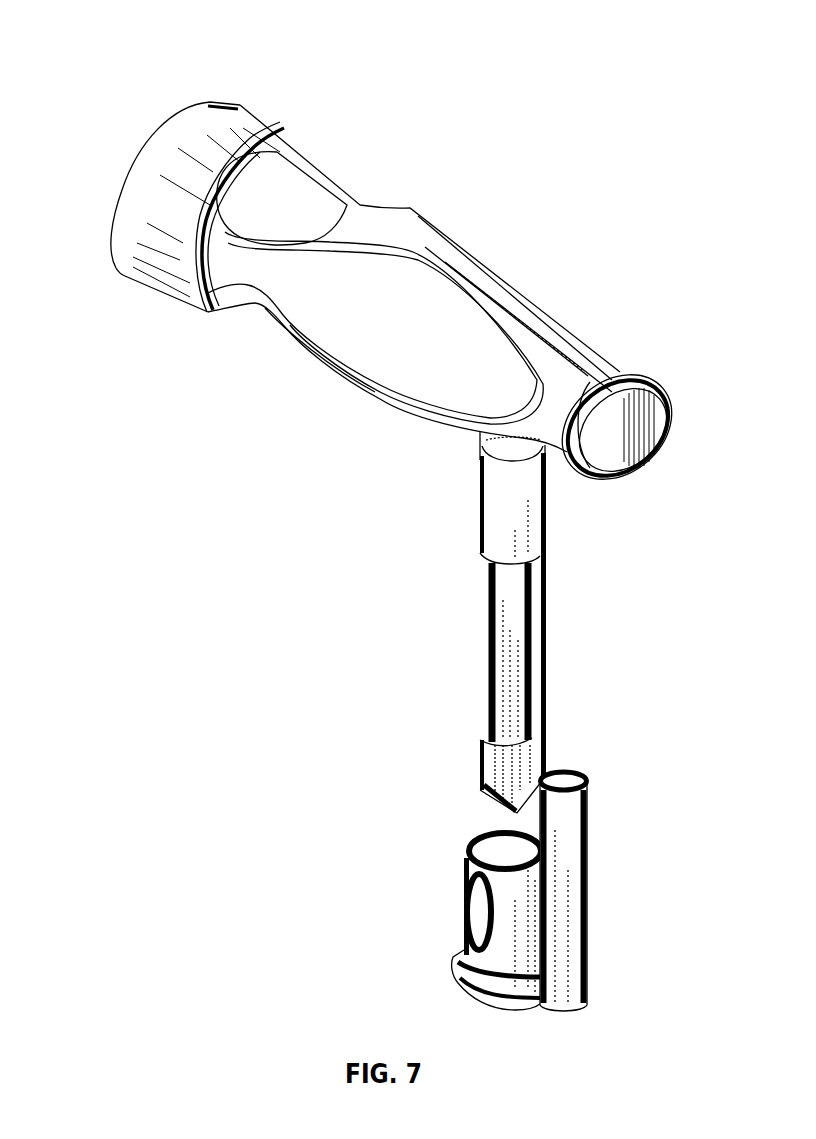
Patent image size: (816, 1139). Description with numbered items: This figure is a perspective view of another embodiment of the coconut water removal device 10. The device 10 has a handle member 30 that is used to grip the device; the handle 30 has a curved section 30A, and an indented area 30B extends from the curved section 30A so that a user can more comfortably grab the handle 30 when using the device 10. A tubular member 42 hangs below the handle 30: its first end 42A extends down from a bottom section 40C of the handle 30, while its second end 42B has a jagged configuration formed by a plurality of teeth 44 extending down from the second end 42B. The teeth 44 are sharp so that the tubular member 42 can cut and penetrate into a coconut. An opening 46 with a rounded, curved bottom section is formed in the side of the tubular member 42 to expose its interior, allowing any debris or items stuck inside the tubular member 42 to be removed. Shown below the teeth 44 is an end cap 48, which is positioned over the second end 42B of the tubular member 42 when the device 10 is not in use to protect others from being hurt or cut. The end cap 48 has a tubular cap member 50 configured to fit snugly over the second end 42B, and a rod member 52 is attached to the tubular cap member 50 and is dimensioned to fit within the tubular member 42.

The coconut water removal device 10 is at (115, 62).
The handle member 30 is at (540, 298).
The curved section 30A is at (413, 210).
The indented area 30B is at (343, 196).
The bottom section 40C is at (473, 442).
The tubular member 42 is at (547, 638).
The first end 42A is at (548, 492).
The second end 42B is at (480, 747).
The teeth 44 is at (510, 807).
The opening 46 is at (490, 663).
The end cap 48 is at (483, 957).
The tubular cap member 50 is at (495, 847).
The rod member 52 is at (587, 858).